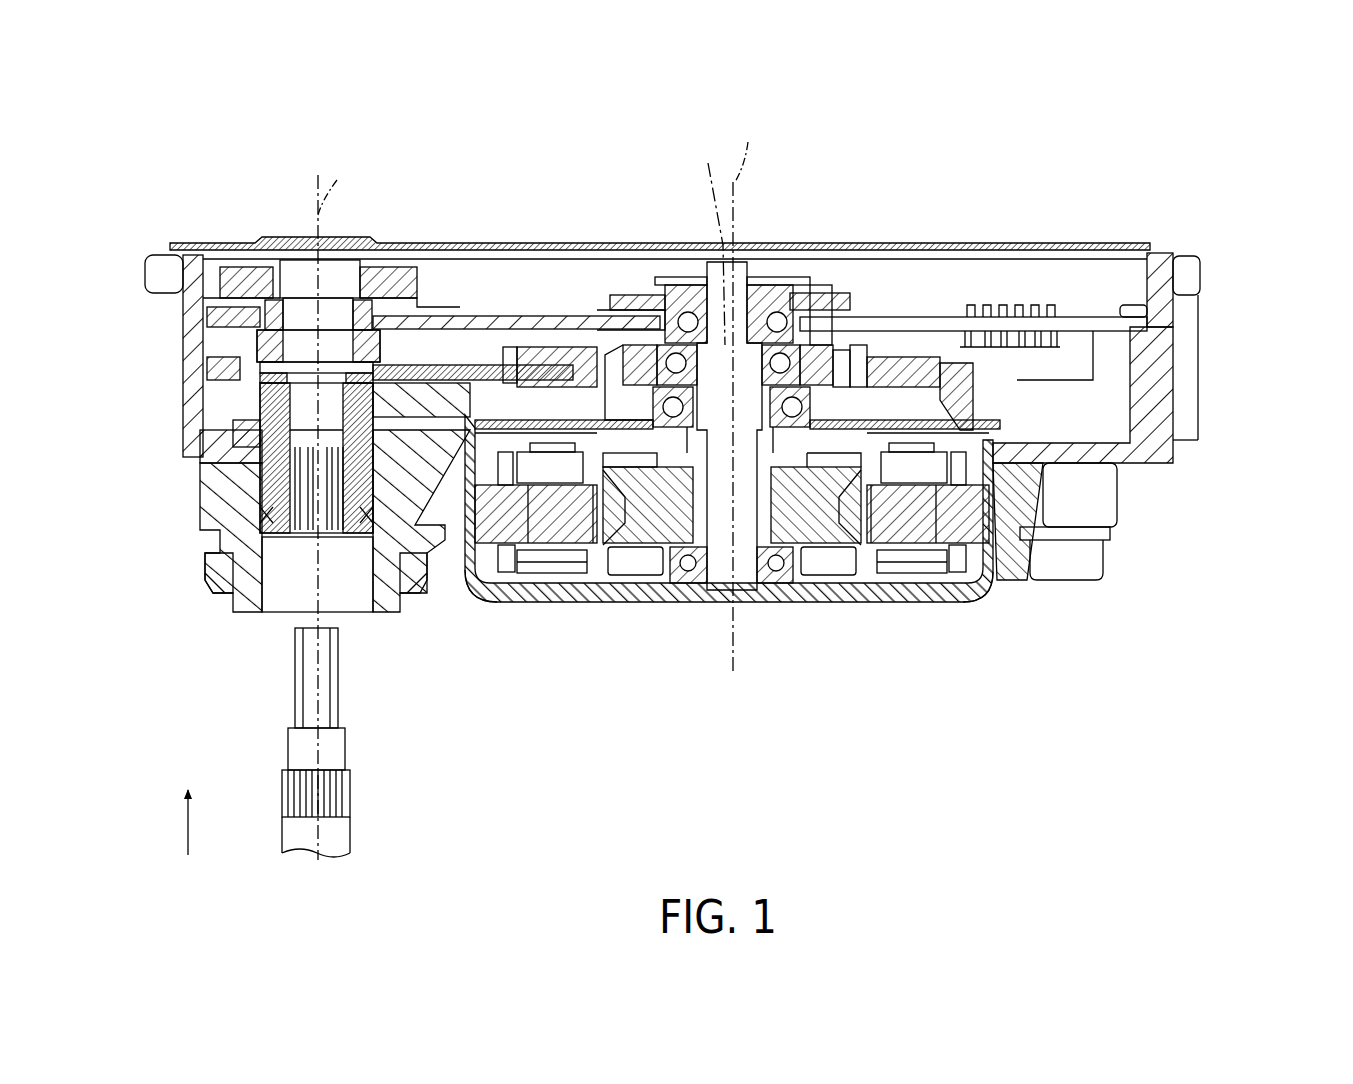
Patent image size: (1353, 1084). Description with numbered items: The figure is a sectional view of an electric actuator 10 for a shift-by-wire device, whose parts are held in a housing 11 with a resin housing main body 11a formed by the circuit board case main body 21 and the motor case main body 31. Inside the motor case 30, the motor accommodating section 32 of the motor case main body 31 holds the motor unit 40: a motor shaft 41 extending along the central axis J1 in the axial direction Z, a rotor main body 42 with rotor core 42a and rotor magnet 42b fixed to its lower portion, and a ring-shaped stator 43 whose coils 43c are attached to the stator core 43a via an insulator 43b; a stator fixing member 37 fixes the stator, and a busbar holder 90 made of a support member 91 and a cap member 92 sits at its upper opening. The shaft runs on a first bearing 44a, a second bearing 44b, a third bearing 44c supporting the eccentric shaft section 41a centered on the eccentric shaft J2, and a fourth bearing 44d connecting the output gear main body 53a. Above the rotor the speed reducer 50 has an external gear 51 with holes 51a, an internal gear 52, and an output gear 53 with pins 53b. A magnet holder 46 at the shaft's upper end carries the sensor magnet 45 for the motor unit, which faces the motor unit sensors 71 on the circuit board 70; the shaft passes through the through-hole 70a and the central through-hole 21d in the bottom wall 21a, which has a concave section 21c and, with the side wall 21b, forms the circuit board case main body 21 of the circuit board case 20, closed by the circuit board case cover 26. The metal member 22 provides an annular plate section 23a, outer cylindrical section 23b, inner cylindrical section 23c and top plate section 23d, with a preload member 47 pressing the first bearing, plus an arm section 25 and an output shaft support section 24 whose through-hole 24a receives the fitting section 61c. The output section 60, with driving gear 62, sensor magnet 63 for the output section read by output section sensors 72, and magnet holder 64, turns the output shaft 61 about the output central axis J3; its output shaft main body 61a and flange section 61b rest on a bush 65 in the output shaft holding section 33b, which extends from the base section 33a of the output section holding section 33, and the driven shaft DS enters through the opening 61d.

The electric actuator 10 is at (1183, 150).
The housing 11 is at (1300, 560).
The housing main body 11a is at (1135, 570).
The circuit board case 20 is at (1305, 505).
The circuit board case main body 21 is at (1203, 437).
The bottom wall 21a is at (1085, 525).
The side wall 21b is at (1158, 322).
The concave section 21c is at (1033, 480).
The central through-hole 21d is at (950, 275).
The metal member 22 is at (1000, 373).
The annular plate section 23a is at (913, 290).
The outer cylindrical section 23b is at (1030, 300).
The inner cylindrical section 23c is at (826, 300).
The top plate section 23d is at (797, 290).
The output shaft support section 24 is at (168, 248).
The through-hole 24a is at (203, 257).
The arm section 25 is at (440, 316).
The circuit board case cover 26 is at (1127, 243).
The motor case 30 is at (1122, 505).
The motor case main body 31 is at (998, 606).
The motor accommodating section 32 is at (983, 598).
The output section holding section 33 is at (220, 605).
The base section 33a is at (438, 555).
The output shaft holding section 33b is at (245, 595).
The stator fixing member 37 is at (918, 590).
The motor unit 40 is at (703, 600).
The motor shaft 41 is at (740, 540).
The eccentric shaft section 41a is at (750, 340).
The rotor main body 42 is at (780, 680).
The rotor core 42a is at (815, 527).
The rotor magnet 42b is at (850, 530).
The stator 43 is at (510, 583).
The stator core 43a is at (555, 520).
The insulator 43b is at (607, 500).
The coils 43c is at (535, 572).
The first bearing 44a is at (818, 290).
The second bearing 44b is at (684, 575).
The third bearing 44c is at (617, 300).
The fourth bearing 44d is at (935, 300).
The sensor magnet for the motor unit 45 is at (635, 345).
The magnet holder 46 is at (680, 300).
The preload member 47 is at (784, 300).
The speed reducer 50 is at (874, 280).
The external gear 51 is at (590, 405).
The holes 51a is at (485, 578).
The internal gear 52 is at (966, 300).
The output gear 53 is at (922, 432).
The output gear main body 53a is at (538, 365).
The pins 53b is at (596, 300).
The output section 60 is at (238, 472).
The output shaft 61 is at (373, 340).
The output shaft main body 61a is at (240, 443).
The flange section 61b is at (258, 400).
The fitting section 61c is at (258, 377).
The opening 61d is at (300, 580).
The driving gear 62 is at (490, 345).
The sensor magnet for the output section 63 is at (240, 262).
The magnet holder 64 is at (278, 258).
The bush 65 is at (380, 540).
The circuit board 70 is at (1085, 317).
The through-hole 70a is at (686, 300).
The motor unit sensors 71 is at (852, 345).
The output section sensors 72 is at (405, 316).
The busbar holder 90 is at (1087, 714).
The support member 91 is at (1055, 545).
The cap member 92 is at (1075, 548).
The central axis J1 is at (745, 396).
The eccentric shaft J2 is at (704, 241).
The output central axis J3 is at (340, 505).
The driven shaft DS is at (328, 750).
The axial direction Z is at (188, 805).